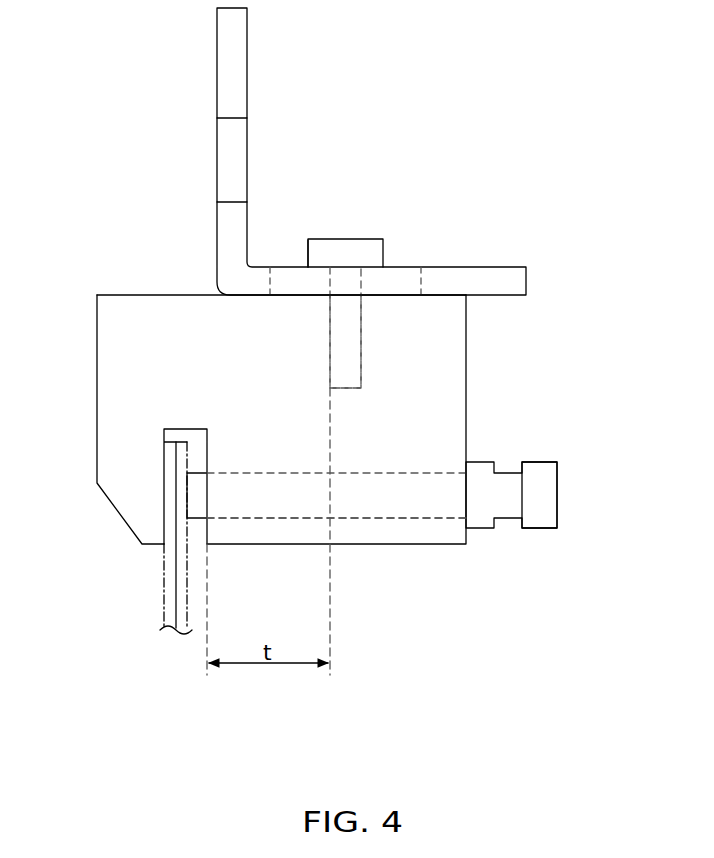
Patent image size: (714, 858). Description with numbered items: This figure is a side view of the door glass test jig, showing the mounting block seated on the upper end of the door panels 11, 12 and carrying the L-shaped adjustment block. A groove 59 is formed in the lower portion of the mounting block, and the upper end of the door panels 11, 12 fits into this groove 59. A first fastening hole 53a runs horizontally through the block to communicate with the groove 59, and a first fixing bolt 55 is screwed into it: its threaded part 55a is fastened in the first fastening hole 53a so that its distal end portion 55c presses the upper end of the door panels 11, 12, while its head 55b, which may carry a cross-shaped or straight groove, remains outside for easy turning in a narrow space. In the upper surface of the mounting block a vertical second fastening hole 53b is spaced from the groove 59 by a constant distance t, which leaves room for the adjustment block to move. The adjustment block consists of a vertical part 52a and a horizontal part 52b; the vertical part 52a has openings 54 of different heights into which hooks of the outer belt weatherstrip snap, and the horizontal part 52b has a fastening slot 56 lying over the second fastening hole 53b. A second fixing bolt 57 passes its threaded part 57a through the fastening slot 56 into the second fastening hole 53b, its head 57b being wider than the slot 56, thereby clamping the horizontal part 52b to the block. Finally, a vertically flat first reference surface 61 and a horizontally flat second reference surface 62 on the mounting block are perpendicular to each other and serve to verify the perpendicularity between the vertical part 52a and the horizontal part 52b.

The door panel 11 is at (150, 595).
The door panel 12 is at (130, 535).
The vertical part 52a is at (217, 50).
The horizontal part 52b is at (486, 267).
The first fastening hole 53a is at (408, 517).
The second fastening hole 53b is at (360, 365).
The opening 54 is at (217, 193).
The first fixing bolt 55 is at (419, 466).
The threaded part 55a is at (396, 490).
The head 55b is at (556, 496).
The distal end portion 55c is at (199, 472).
The fastening slot 56 is at (421, 272).
The second fixing bolt 57 is at (345, 236).
The threaded part 57a is at (328, 322).
The head 57b is at (307, 252).
The groove 59 is at (164, 527).
The first reference surface 61 is at (97, 431).
The second reference surface 62 is at (157, 295).